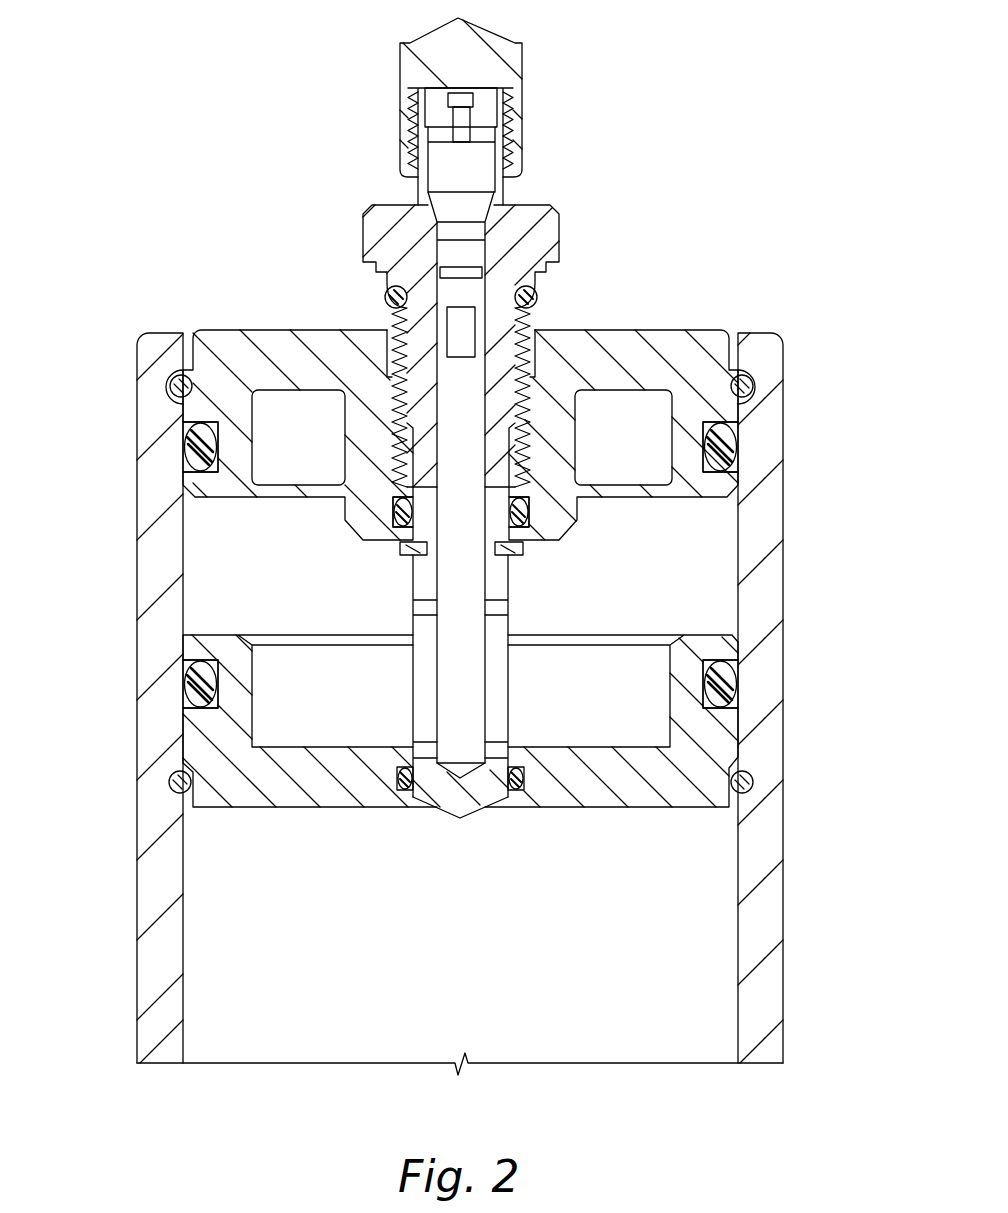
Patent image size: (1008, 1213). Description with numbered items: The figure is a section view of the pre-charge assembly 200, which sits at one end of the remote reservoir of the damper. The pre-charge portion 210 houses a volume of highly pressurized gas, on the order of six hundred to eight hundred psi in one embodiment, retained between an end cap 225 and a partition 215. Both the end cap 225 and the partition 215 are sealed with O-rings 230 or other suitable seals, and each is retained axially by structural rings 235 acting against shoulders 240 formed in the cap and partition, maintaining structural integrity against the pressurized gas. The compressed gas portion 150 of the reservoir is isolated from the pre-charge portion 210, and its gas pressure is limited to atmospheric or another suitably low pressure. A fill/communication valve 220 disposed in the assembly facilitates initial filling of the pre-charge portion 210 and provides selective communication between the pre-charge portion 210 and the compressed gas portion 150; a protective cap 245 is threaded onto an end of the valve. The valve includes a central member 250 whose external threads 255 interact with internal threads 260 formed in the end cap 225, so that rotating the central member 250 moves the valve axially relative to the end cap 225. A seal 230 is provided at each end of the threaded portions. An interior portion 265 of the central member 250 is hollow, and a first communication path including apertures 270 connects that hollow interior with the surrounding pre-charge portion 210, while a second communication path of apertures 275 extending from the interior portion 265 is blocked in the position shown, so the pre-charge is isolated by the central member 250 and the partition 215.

The compressed gas portion 150 is at (213, 896).
The pre-charge assembly 200 is at (744, 234).
The pre-charge portion 210 is at (215, 556).
The partition 215 is at (190, 735).
The fill/communication valve 220 is at (566, 162).
The end cap 225 is at (258, 328).
The O-ring 230 is at (385, 296).
The structural ring 235 is at (173, 386).
The shoulder 240 is at (752, 386).
The protective cap 245 is at (523, 97).
The central member 250 is at (562, 237).
The external threads 255 is at (541, 333).
The internal threads 260 is at (576, 412).
The interior portion 265 is at (460, 580).
The apertures 270 is at (497, 607).
The apertures 275 is at (497, 752).